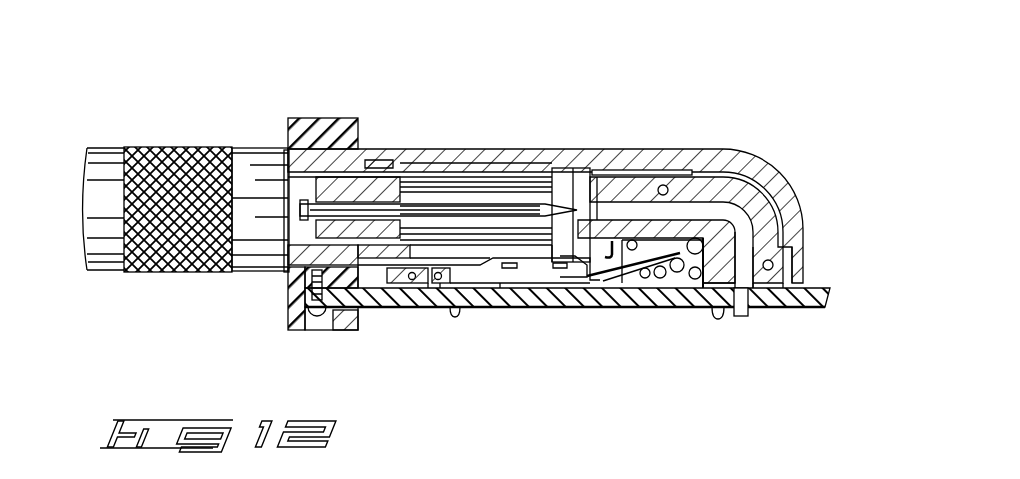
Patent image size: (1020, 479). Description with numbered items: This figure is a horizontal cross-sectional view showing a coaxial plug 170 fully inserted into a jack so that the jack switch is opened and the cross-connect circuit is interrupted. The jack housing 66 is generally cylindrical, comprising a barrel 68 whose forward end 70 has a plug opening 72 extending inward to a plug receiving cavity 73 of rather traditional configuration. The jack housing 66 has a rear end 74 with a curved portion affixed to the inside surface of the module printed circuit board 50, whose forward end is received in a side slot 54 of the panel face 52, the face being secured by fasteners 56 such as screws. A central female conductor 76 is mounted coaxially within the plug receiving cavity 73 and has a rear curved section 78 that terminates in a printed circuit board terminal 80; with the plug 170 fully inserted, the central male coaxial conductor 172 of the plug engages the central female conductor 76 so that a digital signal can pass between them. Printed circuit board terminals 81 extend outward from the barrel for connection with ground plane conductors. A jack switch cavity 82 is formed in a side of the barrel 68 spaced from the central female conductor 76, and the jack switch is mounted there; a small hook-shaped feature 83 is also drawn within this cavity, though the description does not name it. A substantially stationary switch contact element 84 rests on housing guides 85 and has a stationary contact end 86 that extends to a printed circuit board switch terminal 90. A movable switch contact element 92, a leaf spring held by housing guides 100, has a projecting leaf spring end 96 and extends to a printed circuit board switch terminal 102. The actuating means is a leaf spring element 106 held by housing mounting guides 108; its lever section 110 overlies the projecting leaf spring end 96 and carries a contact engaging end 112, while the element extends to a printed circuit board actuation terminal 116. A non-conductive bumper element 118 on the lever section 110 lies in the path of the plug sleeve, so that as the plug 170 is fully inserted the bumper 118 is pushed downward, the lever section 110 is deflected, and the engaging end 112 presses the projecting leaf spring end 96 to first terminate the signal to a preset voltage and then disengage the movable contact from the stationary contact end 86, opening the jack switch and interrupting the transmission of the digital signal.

The printed circuit board 50 is at (795, 308).
The panel face 52 is at (311, 118).
The side slot 54 is at (313, 330).
The fasteners 56 is at (317, 318).
The jack housing 66 is at (501, 116).
The barrel 68 is at (522, 150).
The forward end 70 is at (288, 152).
The plug opening 72 is at (284, 245).
The plug receiving cavity 73 is at (560, 165).
The rear end 74 is at (788, 200).
The central female conductor 76 is at (622, 168).
The rear curved section 78 is at (766, 162).
The printed circuit board terminal 80 is at (760, 310).
The printed circuit board terminals 81 is at (447, 308).
The jack switch cavity 82 is at (567, 308).
The hook 83 is at (612, 308).
The stationary switch contact element 84 is at (680, 150).
The housing guides 85 is at (718, 163).
The stationary contact end 86 is at (597, 190).
The printed circuit board switch terminal 90 is at (712, 308).
The movable switch contact element 92 is at (642, 308).
The projecting leaf spring end 96 is at (588, 308).
The housing guides 100 is at (705, 308).
The printed circuit board switch terminal 102 is at (652, 308).
The leaf spring element 106 is at (500, 308).
The housing mounting guides 108 is at (440, 306).
The lever section 110 is at (495, 205).
The contact engaging end 112 is at (580, 156).
The printed circuit board actuation terminal 116 is at (445, 308).
The non-conductive bumper element 118 is at (540, 308).
The coaxial plug 170 is at (128, 156).
The central male coaxial conductor 172 is at (370, 200).